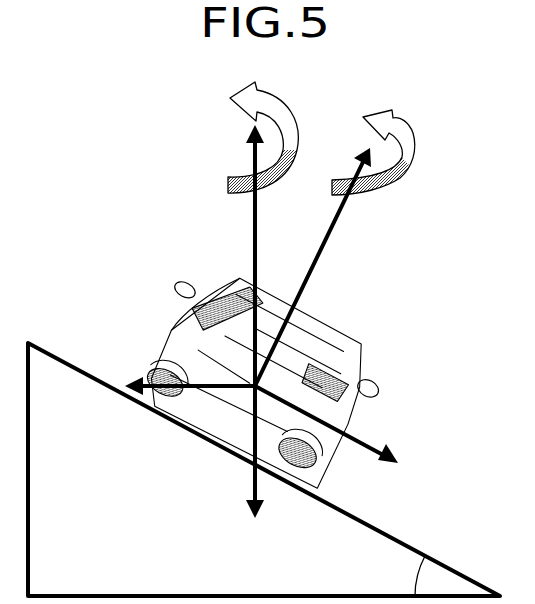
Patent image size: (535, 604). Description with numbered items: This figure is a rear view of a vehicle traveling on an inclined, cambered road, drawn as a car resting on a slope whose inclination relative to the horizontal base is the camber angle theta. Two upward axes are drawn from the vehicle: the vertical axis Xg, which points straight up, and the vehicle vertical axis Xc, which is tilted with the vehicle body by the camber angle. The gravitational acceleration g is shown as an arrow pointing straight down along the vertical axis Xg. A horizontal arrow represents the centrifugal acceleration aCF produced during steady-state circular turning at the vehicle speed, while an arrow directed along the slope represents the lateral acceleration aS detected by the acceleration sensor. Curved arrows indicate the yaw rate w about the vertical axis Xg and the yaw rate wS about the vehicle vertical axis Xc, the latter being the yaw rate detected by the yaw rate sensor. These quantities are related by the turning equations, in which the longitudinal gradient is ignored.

The vertical axis Xg is at (248, 270).
The vehicle vertical axis Xc is at (310, 273).
The gravitational acceleration g is at (238, 452).
The centrifugal acceleration aCF is at (178, 361).
The lateral acceleration aS is at (350, 437).
The yaw rate w is at (267, 133).
The yaw rate about the vehicle vertical axis wS is at (396, 152).
The camber angle theta is at (401, 571).